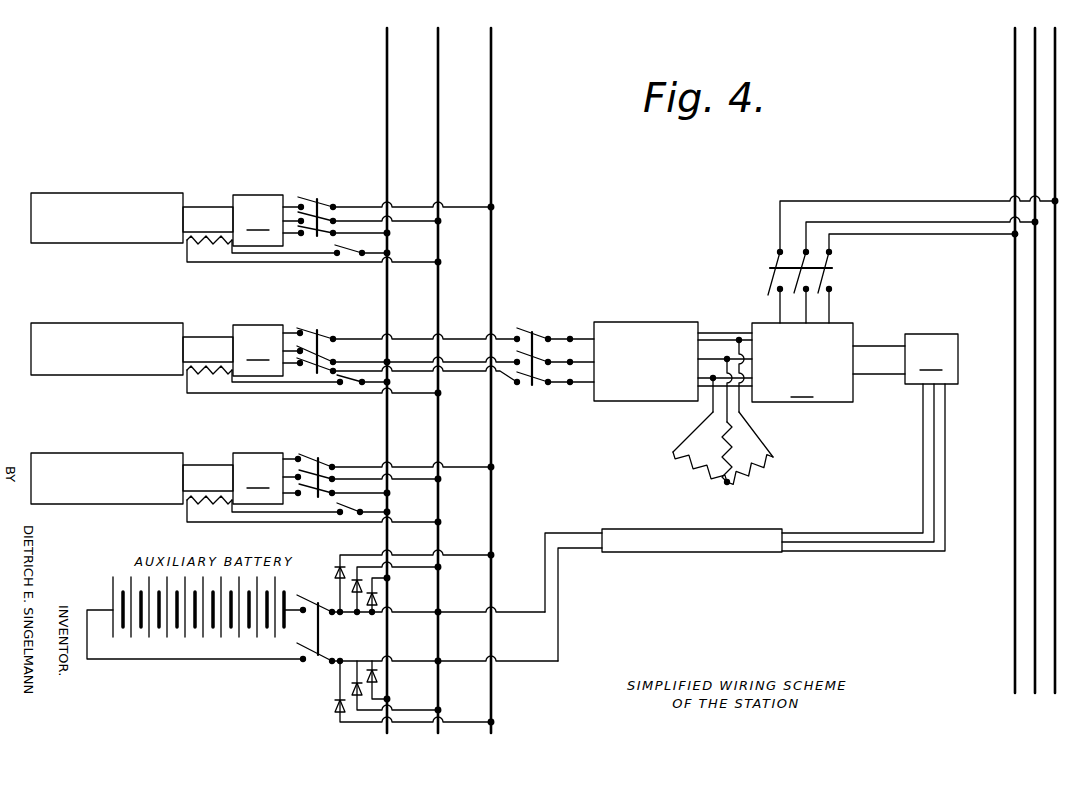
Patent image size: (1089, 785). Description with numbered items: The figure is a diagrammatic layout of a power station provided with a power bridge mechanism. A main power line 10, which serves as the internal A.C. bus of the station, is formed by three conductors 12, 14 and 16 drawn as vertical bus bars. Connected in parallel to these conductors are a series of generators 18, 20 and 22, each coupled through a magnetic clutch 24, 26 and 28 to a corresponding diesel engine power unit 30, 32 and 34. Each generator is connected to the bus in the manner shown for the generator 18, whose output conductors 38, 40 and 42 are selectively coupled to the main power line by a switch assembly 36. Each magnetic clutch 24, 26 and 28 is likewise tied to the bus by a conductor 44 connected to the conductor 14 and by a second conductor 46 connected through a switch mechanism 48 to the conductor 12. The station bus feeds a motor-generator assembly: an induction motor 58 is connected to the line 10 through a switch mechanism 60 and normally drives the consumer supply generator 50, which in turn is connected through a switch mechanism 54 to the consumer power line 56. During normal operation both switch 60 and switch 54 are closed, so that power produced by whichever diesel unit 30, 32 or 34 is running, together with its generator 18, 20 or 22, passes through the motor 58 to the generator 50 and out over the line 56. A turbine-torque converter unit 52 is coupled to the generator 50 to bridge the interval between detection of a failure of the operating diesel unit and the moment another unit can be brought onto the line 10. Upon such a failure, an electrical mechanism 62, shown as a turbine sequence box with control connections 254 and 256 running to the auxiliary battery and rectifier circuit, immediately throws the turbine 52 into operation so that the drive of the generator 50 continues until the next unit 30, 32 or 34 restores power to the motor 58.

The main power line 10 is at (496, 120).
The conductor 12 is at (389, 82).
The conductor 14 is at (440, 82).
The conductor 16 is at (493, 82).
The generator 18 is at (265, 211).
The generator 20 is at (352, 349).
The generator 22 is at (340, 482).
The magnetic clutch 24 is at (191, 206).
The magnetic clutch 26 is at (193, 337).
The magnetic clutch 28 is at (198, 465).
The diesel engine power unit 30 is at (112, 193).
The diesel engine power unit 32 is at (136, 323).
The diesel engine power unit 34 is at (119, 453).
The switch assembly 36 is at (325, 194).
The conductor 38 is at (363, 180).
The conductor 40 is at (412, 220).
The conductor 42 is at (376, 234).
The conductor 44 is at (208, 263).
The conductor 46 is at (272, 254).
The switch mechanism 48 is at (350, 253).
The generator 50 is at (802, 345).
The turbine-torque converter unit 52 is at (909, 344).
The switch mechanism 54 is at (836, 268).
The consumer power line 56 is at (1009, 268).
The induction motor 58 is at (671, 320).
The switch mechanism 60 is at (542, 325).
The electrical mechanism 62 is at (731, 554).
The control line 254 is at (569, 531).
The control line 256 is at (579, 549).